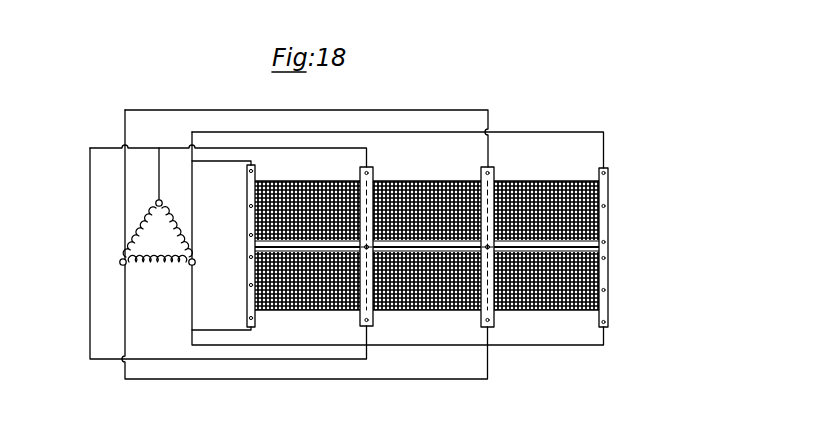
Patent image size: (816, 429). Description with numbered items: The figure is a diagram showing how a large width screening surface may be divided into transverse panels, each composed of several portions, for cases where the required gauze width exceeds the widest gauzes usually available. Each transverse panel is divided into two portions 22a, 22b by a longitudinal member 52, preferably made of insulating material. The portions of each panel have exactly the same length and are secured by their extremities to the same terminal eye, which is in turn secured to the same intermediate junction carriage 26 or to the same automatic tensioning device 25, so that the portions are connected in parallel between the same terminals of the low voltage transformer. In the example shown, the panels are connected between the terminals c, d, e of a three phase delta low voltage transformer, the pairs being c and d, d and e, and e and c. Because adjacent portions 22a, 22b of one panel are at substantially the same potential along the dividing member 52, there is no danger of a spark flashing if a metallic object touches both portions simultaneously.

The portion of transverse panel 22a is at (432, 186).
The portion of transverse panel 22b is at (417, 310).
The automatic tensioning device 25 is at (255, 172).
The intermediate junction carriage 26 is at (373, 172).
The longitudinal member 52 is at (567, 250).
The transformer terminal d is at (162, 200).
The transformer terminal e is at (120, 264).
The transformer terminal c is at (196, 262).